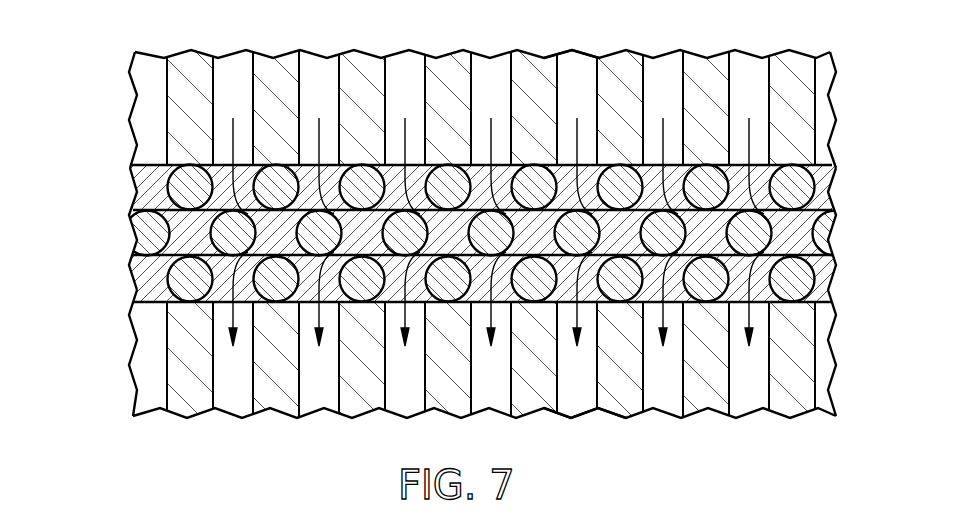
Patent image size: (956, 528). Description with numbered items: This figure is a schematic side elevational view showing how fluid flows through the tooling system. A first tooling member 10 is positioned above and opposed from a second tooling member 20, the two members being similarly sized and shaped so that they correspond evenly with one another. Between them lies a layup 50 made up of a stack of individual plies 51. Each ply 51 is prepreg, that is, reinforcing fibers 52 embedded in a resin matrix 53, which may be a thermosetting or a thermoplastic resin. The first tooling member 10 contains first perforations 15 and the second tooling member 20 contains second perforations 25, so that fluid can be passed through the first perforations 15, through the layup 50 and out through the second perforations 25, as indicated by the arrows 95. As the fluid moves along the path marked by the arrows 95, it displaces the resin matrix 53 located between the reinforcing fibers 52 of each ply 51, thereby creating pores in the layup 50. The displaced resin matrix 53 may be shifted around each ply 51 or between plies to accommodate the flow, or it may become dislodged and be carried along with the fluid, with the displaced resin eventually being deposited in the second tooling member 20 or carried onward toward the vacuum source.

The first tooling member 10 is at (826, 83).
The first perforations 15 is at (577, 75).
The second tooling member 20 is at (826, 372).
The second perforations 25 is at (580, 388).
The layup 50 is at (447, 234).
The ply 51 is at (146, 287).
The reinforcing fibers 52 is at (790, 283).
The resin matrix 53 is at (797, 237).
The arrows 95 is at (750, 129).